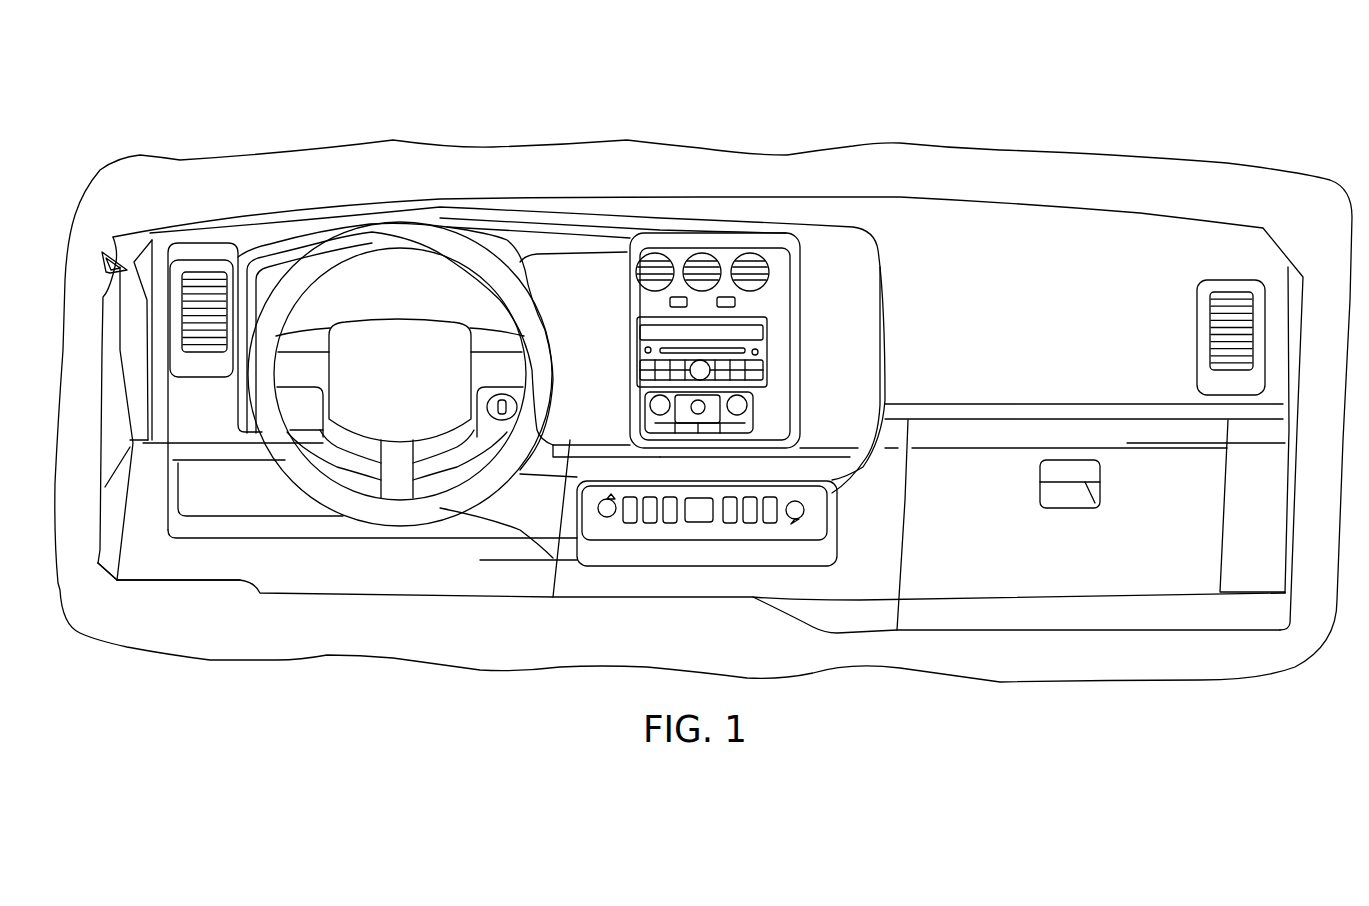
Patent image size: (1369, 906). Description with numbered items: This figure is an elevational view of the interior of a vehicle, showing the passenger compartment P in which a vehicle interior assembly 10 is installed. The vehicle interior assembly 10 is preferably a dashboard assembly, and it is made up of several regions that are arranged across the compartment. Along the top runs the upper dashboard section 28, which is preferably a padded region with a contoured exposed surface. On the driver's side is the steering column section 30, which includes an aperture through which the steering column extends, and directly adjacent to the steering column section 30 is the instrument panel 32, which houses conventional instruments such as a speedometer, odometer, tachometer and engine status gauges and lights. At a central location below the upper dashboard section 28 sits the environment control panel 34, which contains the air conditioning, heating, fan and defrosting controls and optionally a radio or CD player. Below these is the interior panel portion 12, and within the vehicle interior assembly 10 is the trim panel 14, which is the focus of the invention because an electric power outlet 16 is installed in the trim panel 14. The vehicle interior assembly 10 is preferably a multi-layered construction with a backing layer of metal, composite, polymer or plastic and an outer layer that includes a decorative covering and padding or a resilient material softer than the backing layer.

The vehicle interior assembly 10 is at (805, 190).
The interior panel portion 12 is at (640, 577).
The trim panel 14 is at (700, 530).
The electric power outlet 16 is at (603, 515).
The upper dashboard section 28 is at (1100, 262).
The steering column section 30 is at (233, 488).
The instrument panel 32 is at (265, 283).
The environment control panel 34 is at (758, 305).
The passenger compartment P is at (1013, 100).